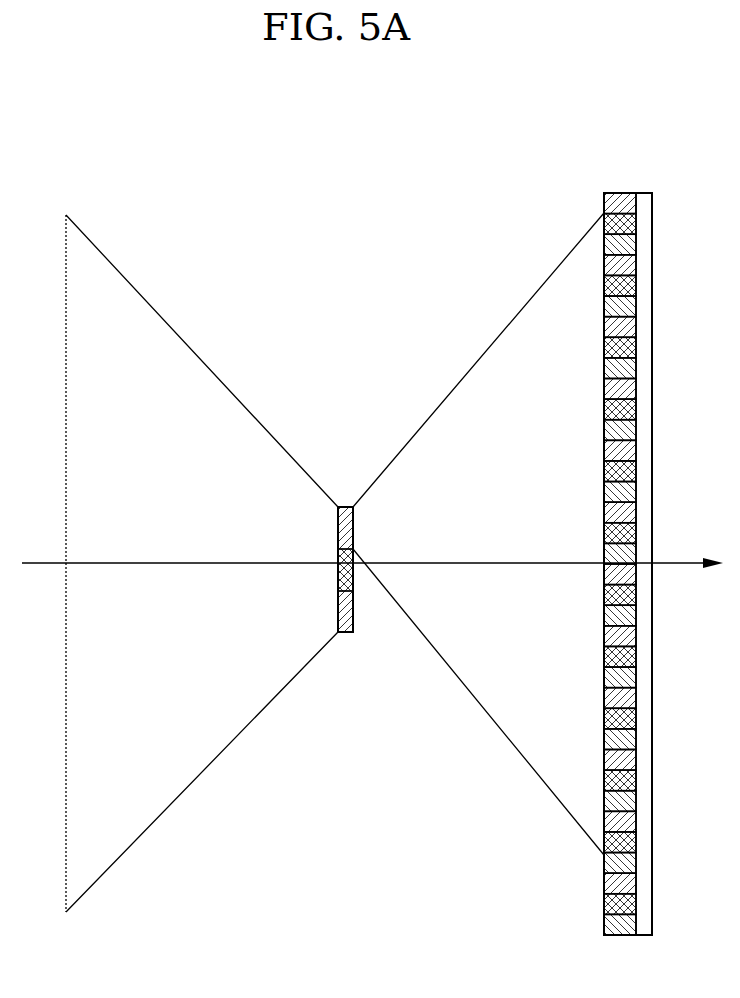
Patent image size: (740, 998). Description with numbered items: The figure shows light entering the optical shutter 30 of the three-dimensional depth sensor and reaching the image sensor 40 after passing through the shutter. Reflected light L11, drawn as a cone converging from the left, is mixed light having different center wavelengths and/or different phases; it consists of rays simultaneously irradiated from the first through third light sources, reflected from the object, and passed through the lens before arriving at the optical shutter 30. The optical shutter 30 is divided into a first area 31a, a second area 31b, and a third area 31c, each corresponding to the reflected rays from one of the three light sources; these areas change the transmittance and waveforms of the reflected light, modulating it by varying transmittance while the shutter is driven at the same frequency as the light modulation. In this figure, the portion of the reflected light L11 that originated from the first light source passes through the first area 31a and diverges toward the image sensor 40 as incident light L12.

The image sensor 40 is at (627, 175).
The optical shutter 30 is at (358, 563).
The first area 31a is at (338, 527).
The second area 31b is at (338, 578).
The third area 31c is at (353, 617).
The reflected light L11 is at (143, 312).
The incident light L12 is at (500, 346).